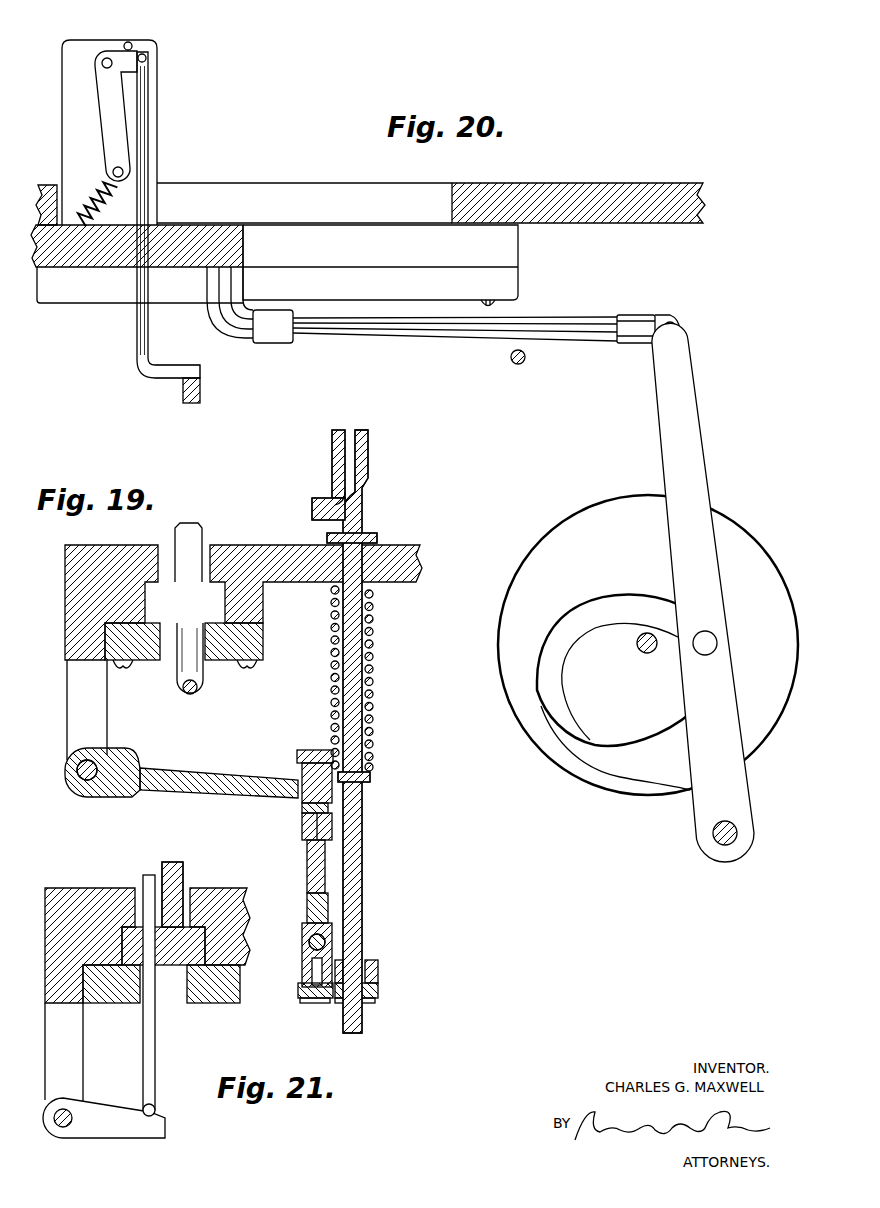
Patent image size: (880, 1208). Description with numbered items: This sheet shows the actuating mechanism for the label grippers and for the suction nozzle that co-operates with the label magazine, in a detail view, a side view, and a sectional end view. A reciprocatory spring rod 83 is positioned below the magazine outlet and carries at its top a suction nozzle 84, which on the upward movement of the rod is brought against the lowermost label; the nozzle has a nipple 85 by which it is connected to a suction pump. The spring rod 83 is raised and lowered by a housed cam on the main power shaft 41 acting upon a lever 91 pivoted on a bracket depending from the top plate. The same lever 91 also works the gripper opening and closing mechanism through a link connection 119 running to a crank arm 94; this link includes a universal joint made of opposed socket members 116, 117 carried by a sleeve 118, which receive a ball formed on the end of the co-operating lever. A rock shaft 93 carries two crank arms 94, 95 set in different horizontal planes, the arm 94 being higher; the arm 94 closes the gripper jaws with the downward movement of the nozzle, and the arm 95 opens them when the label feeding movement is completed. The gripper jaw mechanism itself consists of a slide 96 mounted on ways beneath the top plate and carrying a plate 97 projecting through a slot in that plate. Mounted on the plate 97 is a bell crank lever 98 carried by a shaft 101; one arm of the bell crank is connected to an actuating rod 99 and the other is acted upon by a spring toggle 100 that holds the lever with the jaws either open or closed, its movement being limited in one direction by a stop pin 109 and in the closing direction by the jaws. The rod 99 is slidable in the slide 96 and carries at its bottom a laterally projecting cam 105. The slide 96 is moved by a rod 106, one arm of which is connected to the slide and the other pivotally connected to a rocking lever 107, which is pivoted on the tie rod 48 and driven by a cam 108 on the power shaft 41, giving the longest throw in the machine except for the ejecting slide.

In FIG. 20, the main power shaft 41 is at (640, 651).
In FIG. 20, the tie rod 48 is at (740, 835).
In FIG. 19, the spring rod 83 is at (352, 637).
In FIG. 19, the suction nozzle 84 is at (350, 430).
In FIG. 19, the nipple 85 is at (314, 497).
In FIG. 19, the lever 91 is at (322, 999).
In FIG. 19, the rock shaft 93 is at (105, 758).
In FIG. 20, the crank arm 94 is at (526, 358).
In FIG. 19, the crank arm 94 is at (200, 772).
In FIG. 20, the crank arm 95 is at (183, 393).
In FIG. 21, the crank arm 95 is at (115, 1130).
In FIG. 20, the slide 96 is at (92, 258).
In FIG. 19, the slide 96 is at (243, 606).
In FIG. 21, the slide 96 is at (131, 935).
In FIG. 20, the plate 97 is at (62, 50).
In FIG. 19, the plate 97 is at (193, 524).
In FIG. 21, the plate 97 is at (176, 862).
In FIG. 20, the bell crank lever 98 is at (105, 100).
In FIG. 20, the actuating rod 99 is at (150, 88).
In FIG. 21, the actuating rod 99 is at (144, 1030).
In FIG. 20, the spring toggle 100 is at (100, 190).
In FIG. 20, the shaft 101 is at (107, 52).
In FIG. 20, the cam 105 is at (165, 365).
In FIG. 21, the cam 105 is at (158, 1110).
In FIG. 20, the rod 106 is at (560, 320).
In FIG. 20, the rocking lever 107 is at (668, 440).
In FIG. 20, the cam 108 is at (587, 510).
In FIG. 20, the stop pin 109 is at (132, 43).
In FIG. 19, the socket member 116 is at (314, 750).
In FIG. 19, the socket member 117 is at (330, 818).
In FIG. 19, the sleeve 118 is at (330, 806).
In FIG. 19, the link connection 119 is at (325, 866).